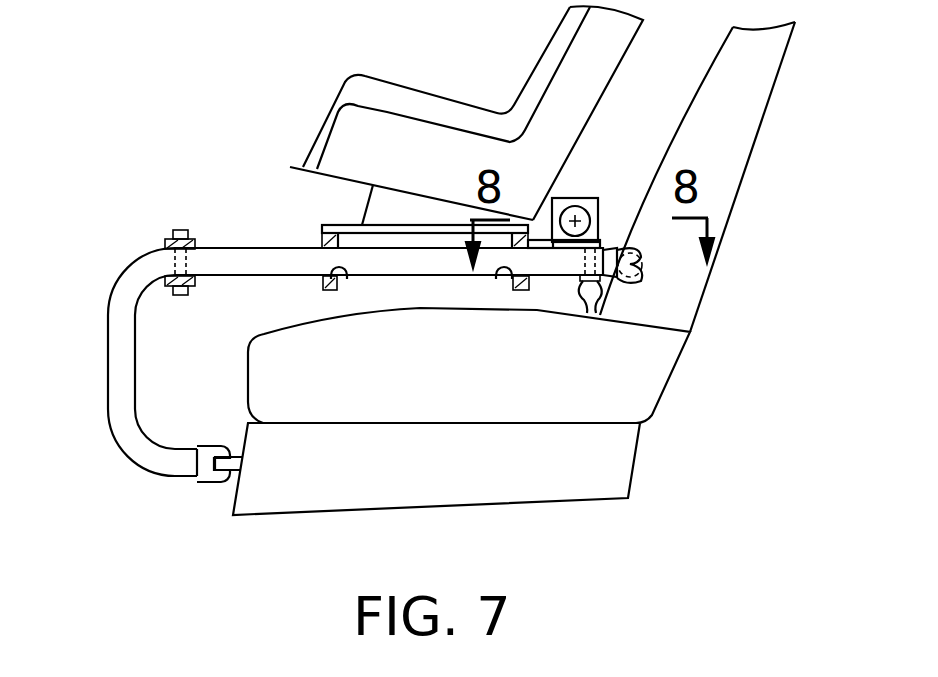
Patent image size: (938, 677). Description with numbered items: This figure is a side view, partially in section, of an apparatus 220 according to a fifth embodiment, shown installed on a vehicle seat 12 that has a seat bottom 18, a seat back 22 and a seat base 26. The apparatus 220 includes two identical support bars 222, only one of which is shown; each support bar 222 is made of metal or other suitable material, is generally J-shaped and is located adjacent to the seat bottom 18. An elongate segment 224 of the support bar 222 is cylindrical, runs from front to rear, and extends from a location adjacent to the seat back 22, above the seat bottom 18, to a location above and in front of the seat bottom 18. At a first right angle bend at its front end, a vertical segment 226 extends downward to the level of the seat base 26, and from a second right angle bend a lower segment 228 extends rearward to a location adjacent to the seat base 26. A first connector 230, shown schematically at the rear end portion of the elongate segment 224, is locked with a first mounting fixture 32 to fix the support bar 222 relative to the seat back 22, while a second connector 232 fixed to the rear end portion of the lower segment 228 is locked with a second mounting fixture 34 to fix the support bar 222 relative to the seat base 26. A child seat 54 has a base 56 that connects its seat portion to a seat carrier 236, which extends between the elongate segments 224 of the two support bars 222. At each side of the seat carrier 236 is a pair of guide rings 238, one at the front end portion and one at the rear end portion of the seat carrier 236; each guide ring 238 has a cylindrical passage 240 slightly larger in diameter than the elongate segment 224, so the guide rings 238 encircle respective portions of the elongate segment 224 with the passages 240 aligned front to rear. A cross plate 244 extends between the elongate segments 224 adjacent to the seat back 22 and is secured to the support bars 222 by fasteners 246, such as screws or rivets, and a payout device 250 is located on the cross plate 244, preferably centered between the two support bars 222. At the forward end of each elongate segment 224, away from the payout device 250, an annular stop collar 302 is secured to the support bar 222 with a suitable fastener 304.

The vehicle seat 12 is at (786, 88).
The seat bottom 18 is at (662, 368).
The seat back 22 is at (752, 137).
The seat base 26 is at (625, 461).
The first mounting fixture 32 is at (642, 265).
The second mounting fixture 34 is at (237, 456).
The child seat 54 is at (513, 60).
The base 56 is at (370, 201).
The apparatus 220 is at (135, 136).
The support bar 222 is at (115, 328).
The elongate segment 224 is at (236, 263).
The vertical segment 226 is at (122, 375).
The lower segment 228 is at (163, 468).
The first connector 230 is at (632, 238).
The second connector 232 is at (222, 447).
The seat carrier 236 is at (318, 232).
The guide ring 238 is at (325, 284).
The cylindrical passage 240 is at (350, 277).
The cross plate 244 is at (600, 247).
The fastener 246 is at (592, 317).
The payout device 250 is at (577, 192).
The stop collar 302 is at (167, 247).
The fastener 304 is at (172, 237).